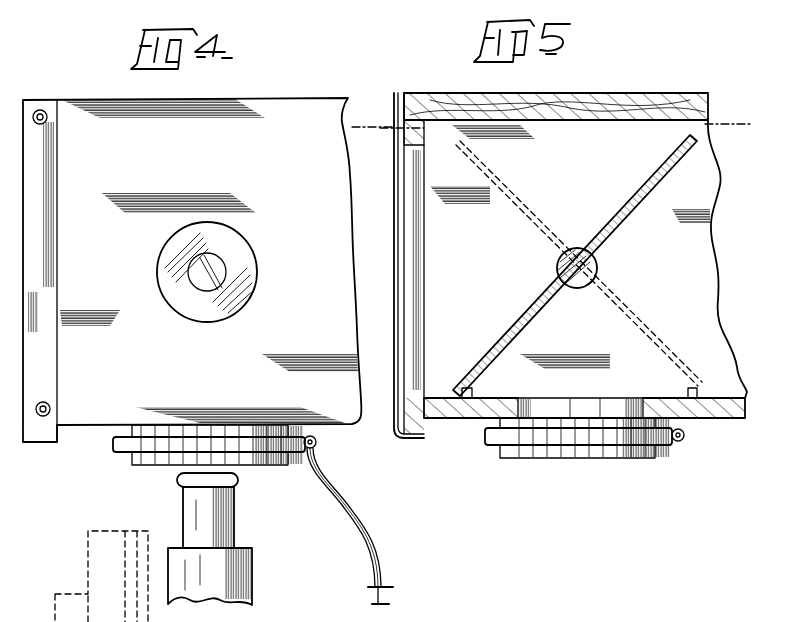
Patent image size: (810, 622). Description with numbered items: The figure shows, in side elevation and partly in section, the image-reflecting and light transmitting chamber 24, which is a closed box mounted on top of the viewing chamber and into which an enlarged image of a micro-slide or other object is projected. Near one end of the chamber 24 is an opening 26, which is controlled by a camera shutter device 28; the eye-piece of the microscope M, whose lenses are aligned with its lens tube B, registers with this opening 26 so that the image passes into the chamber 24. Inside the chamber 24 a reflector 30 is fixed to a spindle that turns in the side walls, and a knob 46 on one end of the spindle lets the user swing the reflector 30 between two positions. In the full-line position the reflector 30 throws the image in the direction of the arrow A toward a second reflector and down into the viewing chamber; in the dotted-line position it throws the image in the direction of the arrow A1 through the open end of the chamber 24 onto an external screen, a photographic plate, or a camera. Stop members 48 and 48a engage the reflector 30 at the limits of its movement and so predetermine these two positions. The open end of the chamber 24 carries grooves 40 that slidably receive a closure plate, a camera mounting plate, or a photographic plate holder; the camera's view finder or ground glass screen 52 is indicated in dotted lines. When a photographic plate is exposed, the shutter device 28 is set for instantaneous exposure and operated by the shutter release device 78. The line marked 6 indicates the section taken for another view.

In FIG. 4, the image-reflecting and light transmitting chamber 24 is at (303, 117).
In FIG. 5, the image-reflecting and light transmitting chamber 24 is at (663, 93).
In FIG. 4, the section line of FIG. 6 is at (372, 125).
In FIG. 5, the section line of FIG. 6 is at (727, 120).
In FIG. 4, the knob 46 is at (244, 265).
In FIG. 4, the camera shutter device 28 is at (150, 463).
In FIG. 5, the camera shutter device 28 is at (622, 460).
In FIG. 4, the lens tube B is at (238, 518).
In FIG. 4, the microscope M is at (245, 568).
In FIG. 4, the view finder or ground glass screen 52 is at (42, 621).
In FIG. 4, the shutter release device 78 is at (372, 532).
In FIG. 5, the grooves 40 is at (400, 95).
In FIG. 5, the reflector 30 is at (514, 190).
In FIG. 5, the arrow A is at (703, 268).
In FIG. 5, the arrow A1 is at (530, 268).
In FIG. 5, the stop member 48 is at (480, 398).
In FIG. 5, the stop member 48a is at (696, 398).
In FIG. 5, the opening 26 is at (567, 410).